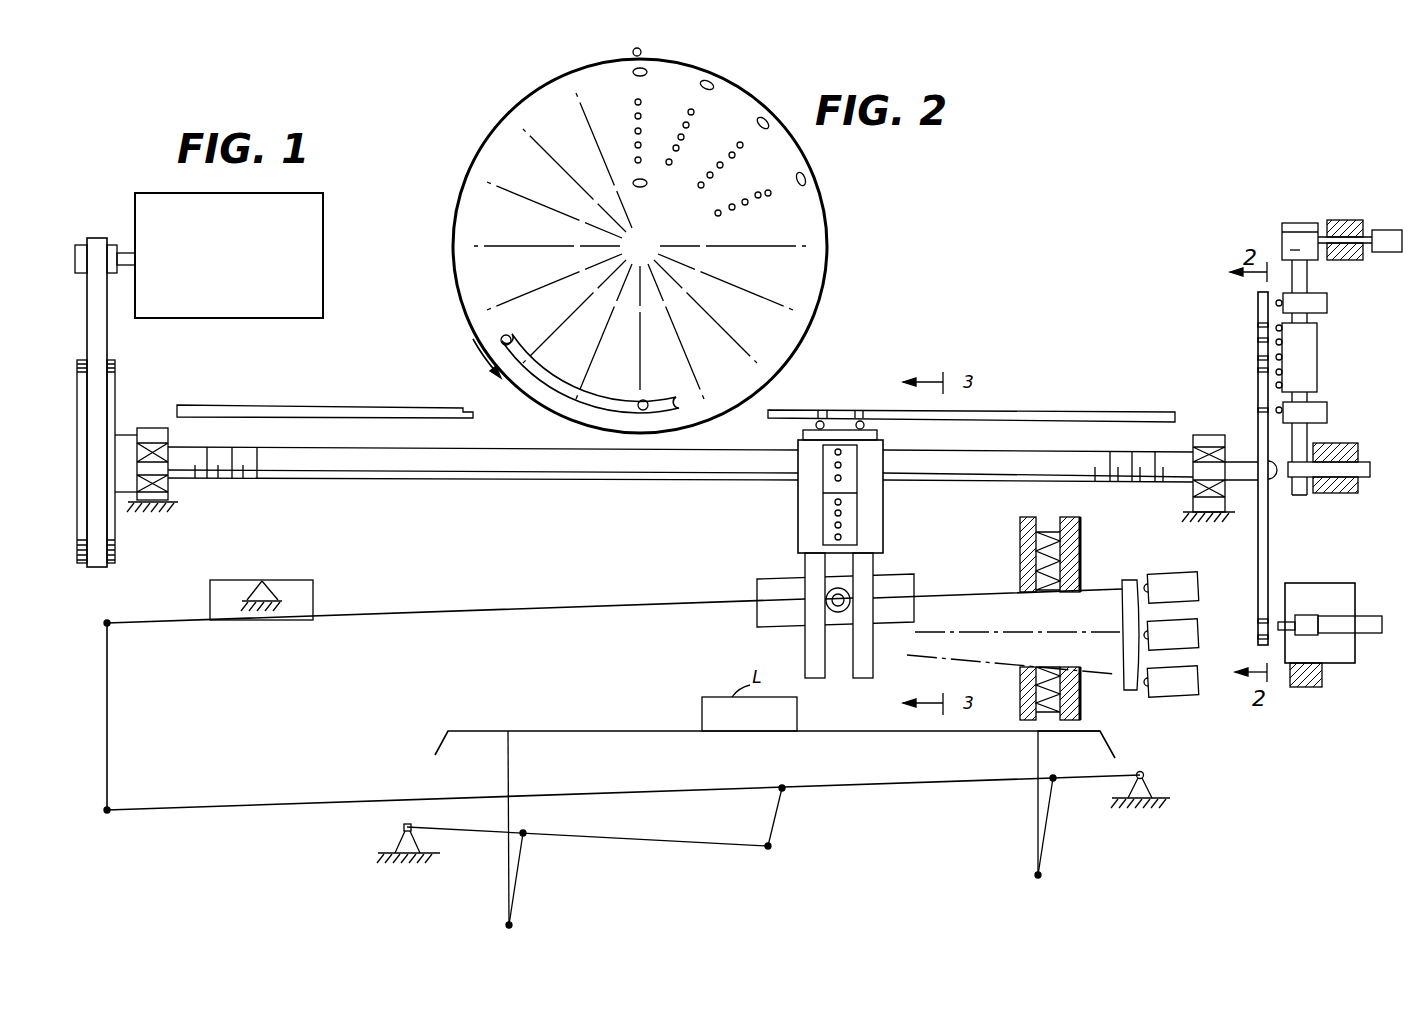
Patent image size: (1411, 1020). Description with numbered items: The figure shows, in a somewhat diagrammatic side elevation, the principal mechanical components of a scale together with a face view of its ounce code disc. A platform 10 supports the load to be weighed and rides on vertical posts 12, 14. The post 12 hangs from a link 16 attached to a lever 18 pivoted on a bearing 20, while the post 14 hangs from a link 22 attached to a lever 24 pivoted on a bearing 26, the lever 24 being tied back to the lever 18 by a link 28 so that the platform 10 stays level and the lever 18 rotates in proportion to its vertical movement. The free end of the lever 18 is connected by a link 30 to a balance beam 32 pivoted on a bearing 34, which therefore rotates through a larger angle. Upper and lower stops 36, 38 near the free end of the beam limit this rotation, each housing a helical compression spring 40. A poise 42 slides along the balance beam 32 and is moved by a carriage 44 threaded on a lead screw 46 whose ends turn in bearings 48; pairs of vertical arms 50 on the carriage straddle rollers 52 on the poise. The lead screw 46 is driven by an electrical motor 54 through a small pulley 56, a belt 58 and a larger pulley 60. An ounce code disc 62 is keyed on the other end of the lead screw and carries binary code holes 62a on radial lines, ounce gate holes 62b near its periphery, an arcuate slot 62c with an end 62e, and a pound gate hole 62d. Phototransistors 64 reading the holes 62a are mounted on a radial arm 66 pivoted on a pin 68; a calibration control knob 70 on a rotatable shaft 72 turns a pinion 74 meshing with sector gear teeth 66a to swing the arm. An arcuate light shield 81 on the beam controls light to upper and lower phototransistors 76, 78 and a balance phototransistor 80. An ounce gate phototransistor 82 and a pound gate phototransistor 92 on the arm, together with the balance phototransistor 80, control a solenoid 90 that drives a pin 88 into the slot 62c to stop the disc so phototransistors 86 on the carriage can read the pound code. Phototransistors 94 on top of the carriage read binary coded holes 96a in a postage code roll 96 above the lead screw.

In FIG. 1, the platform 10 is at (555, 731).
In FIG. 1, the vertical post 12 is at (1037, 762).
In FIG. 1, the vertical post 14 is at (510, 764).
In FIG. 1, the link 16 is at (1048, 812).
In FIG. 1, the lever 18 is at (878, 784).
In FIG. 1, the bearing 20 is at (1145, 772).
In FIG. 1, the link 22 is at (522, 858).
In FIG. 1, the lever 24 is at (610, 838).
In FIG. 1, the bearing 26 is at (403, 827).
In FIG. 1, the link 28 is at (778, 820).
In FIG. 1, the link 30 is at (108, 697).
In FIG. 1, the balance beam 32 is at (485, 608).
In FIG. 1, the bearing 34 is at (262, 580).
In FIG. 1, the upper stop 36 is at (1083, 535).
In FIG. 1, the lower stop 38 is at (1083, 700).
In FIG. 1, the helical compression spring 40 is at (1036, 552).
In FIG. 1, the poise 42 is at (888, 578).
In FIG. 1, the carriage 44 is at (885, 513).
In FIG. 1, the lead screw 46 is at (628, 481).
In FIG. 1, the bearing 48 is at (150, 428).
In FIG. 1, the vertical arm 50 is at (805, 645).
In FIG. 1, the roller 52 is at (828, 595).
In FIG. 1, the electrical motor 54 is at (236, 260).
In FIG. 1, the small pulley 56 is at (113, 245).
In FIG. 1, the belt 58 is at (108, 327).
In FIG. 1, the larger pulley 60 is at (116, 385).
In FIG. 1, the ounce code disc 62 is at (1269, 530).
In FIG. 2, the ounce code disc 62 is at (826, 290).
In FIG. 1, the hole 62a is at (1258, 372).
In FIG. 2, the hole 62a is at (748, 197).
In FIG. 1, the ounce gate hole 62b is at (1258, 300).
In FIG. 2, the ounce gate hole 62b is at (700, 86).
In FIG. 2, the slot 62c is at (592, 398).
In FIG. 1, the pound gate hole 62d is at (1258, 412).
In FIG. 2, the pound gate hole 62d is at (648, 186).
In FIG. 2, the end of slot 62e is at (505, 335).
In FIG. 1, the phototransistor 64 is at (1282, 372).
In FIG. 1, the radial arm 66 is at (1308, 275).
In FIG. 1, the sector gear teeth 66a is at (1290, 252).
In FIG. 1, the pin 68 is at (1358, 465).
In FIG. 1, the calibration control knob 70 is at (1386, 230).
In FIG. 1, the rotatable shaft 72 is at (1333, 219).
In FIG. 1, the pinion 74 is at (1290, 223).
In FIG. 1, the upper phototransistor 76 is at (1152, 590).
In FIG. 1, the lower phototransistor 78 is at (1152, 684).
In FIG. 1, the balance phototransistor 80 is at (1152, 638).
In FIG. 1, the arcuate light shield 81 is at (1128, 578).
In FIG. 1, the ounce gate phototransistor 82 is at (1282, 303).
In FIG. 1, the phototransistor 86 is at (832, 525).
In FIG. 1, the pin 88 is at (1280, 622).
In FIG. 2, the pin 88 is at (648, 402).
In FIG. 1, the solenoid 90 is at (1356, 595).
In FIG. 1, the pound gate phototransistor 92 is at (1282, 411).
In FIG. 1, the phototransistor 94 is at (815, 427).
In FIG. 1, the postage code roll 96 is at (1000, 412).
In FIG. 1, the binary coded hole 96a is at (859, 409).